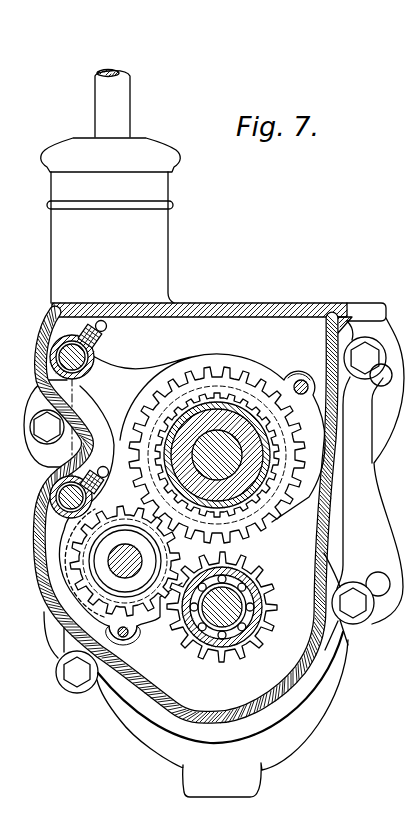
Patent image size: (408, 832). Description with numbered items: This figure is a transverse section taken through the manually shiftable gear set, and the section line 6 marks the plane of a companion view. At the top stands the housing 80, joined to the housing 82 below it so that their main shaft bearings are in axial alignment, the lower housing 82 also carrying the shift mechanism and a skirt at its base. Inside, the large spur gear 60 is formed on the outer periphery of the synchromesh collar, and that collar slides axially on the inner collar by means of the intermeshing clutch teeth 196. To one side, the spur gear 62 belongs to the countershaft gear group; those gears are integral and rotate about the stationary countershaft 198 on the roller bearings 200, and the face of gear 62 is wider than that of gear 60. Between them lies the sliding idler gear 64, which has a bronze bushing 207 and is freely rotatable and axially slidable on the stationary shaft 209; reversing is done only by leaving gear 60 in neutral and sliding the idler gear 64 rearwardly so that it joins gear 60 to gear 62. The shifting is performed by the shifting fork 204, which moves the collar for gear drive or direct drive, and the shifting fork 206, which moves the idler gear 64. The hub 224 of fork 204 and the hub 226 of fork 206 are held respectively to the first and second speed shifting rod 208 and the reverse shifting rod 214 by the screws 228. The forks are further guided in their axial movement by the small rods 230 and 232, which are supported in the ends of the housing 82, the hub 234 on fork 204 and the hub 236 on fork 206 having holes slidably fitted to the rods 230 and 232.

The section line 6- 6 is at (108, 305).
The spur gear 60 is at (185, 513).
The spur gear 62 is at (252, 578).
The sliding idler gear 64 is at (194, 555).
The housing 80 is at (325, 712).
The housing 82 is at (277, 703).
The clutch teeth 196 is at (176, 409).
The stationary countershaft 198 is at (262, 597).
The roller bearings 200 is at (245, 612).
The shifting fork 204 is at (207, 357).
The shifting fork 206 is at (134, 631).
The bronze bushing 207 is at (110, 580).
The first and second speed shifting rod 208 is at (92, 360).
The stationary shaft 209 is at (113, 560).
The reverse shifting rod 214 is at (66, 503).
The hub 224 is at (37, 348).
The hub 226 is at (50, 494).
The screws 228 is at (107, 330).
The small rod 230 is at (301, 380).
The small rod 232 is at (145, 643).
The hub 234 is at (291, 374).
The hub 236 is at (138, 649).